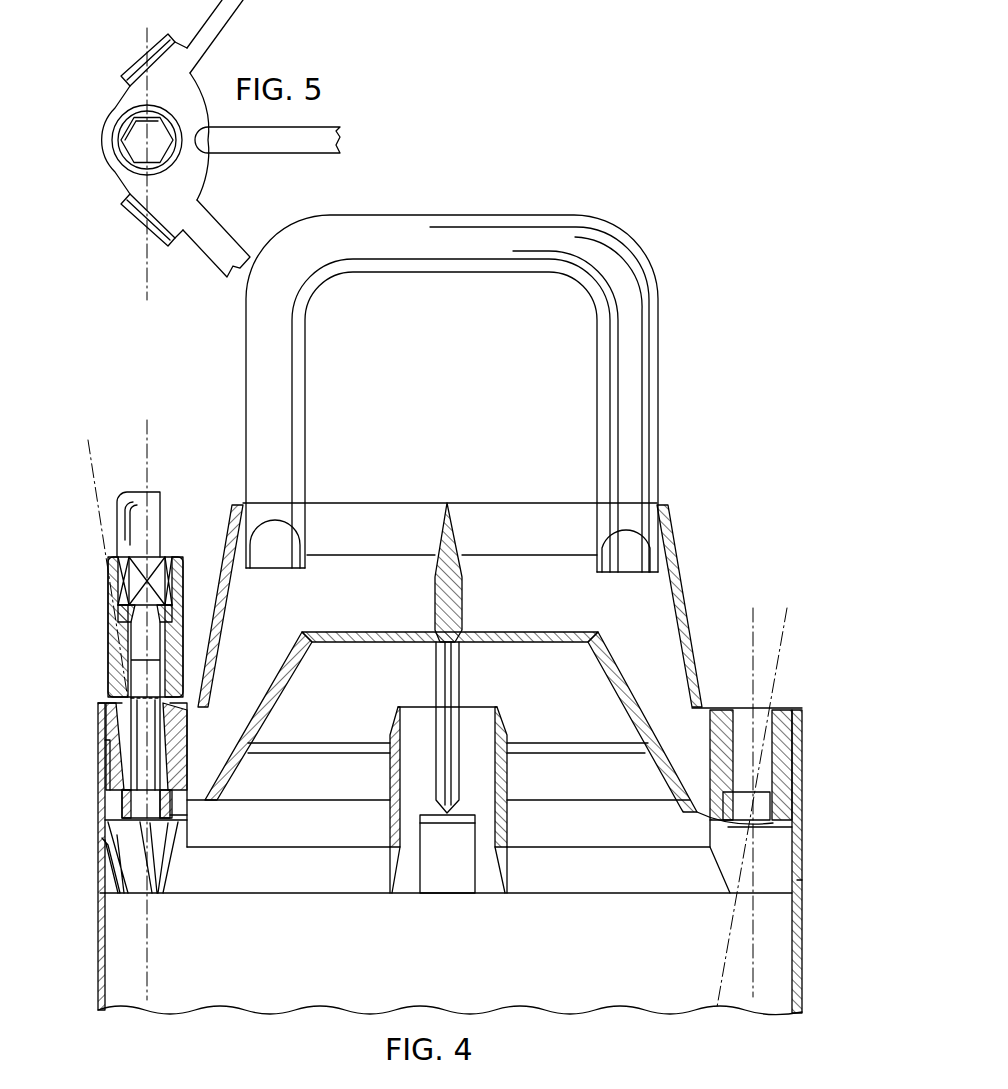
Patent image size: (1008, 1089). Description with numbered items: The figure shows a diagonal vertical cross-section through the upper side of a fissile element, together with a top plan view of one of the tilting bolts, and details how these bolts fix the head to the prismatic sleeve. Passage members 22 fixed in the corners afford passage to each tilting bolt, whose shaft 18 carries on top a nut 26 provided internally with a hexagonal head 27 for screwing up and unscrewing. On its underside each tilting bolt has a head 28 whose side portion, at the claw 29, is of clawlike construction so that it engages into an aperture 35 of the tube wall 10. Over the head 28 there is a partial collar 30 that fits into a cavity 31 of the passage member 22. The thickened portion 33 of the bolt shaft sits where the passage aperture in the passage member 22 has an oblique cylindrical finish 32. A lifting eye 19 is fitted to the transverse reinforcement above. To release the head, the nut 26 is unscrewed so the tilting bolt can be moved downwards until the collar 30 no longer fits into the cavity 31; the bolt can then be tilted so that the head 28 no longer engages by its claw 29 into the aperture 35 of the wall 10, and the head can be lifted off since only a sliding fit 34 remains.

In FIG. 4, the wall 10 is at (100, 962).
In FIG. 4, the shaft 18 is at (138, 677).
In FIG. 4, the lifting eye 19 is at (640, 271).
In FIG. 4, the passage member 22 is at (176, 736).
In FIG. 5, the nut 26 is at (110, 146).
In FIG. 4, the nut 26 is at (108, 594).
In FIG. 5, the hexagonal head 27 is at (124, 153).
In FIG. 4, the hexagonal head 27 is at (160, 558).
In FIG. 4, the head 28 is at (125, 878).
In FIG. 4, the claw 29 is at (100, 850).
In FIG. 4, the partial collar 30 is at (135, 808).
In FIG. 4, the cavity 31 is at (167, 807).
In FIG. 4, the oblique cylindrical finish 32 is at (117, 729).
In FIG. 4, the thickened portion 33 is at (138, 757).
In FIG. 4, the sliding fit 34 is at (104, 752).
In FIG. 4, the aperture 35 is at (100, 893).